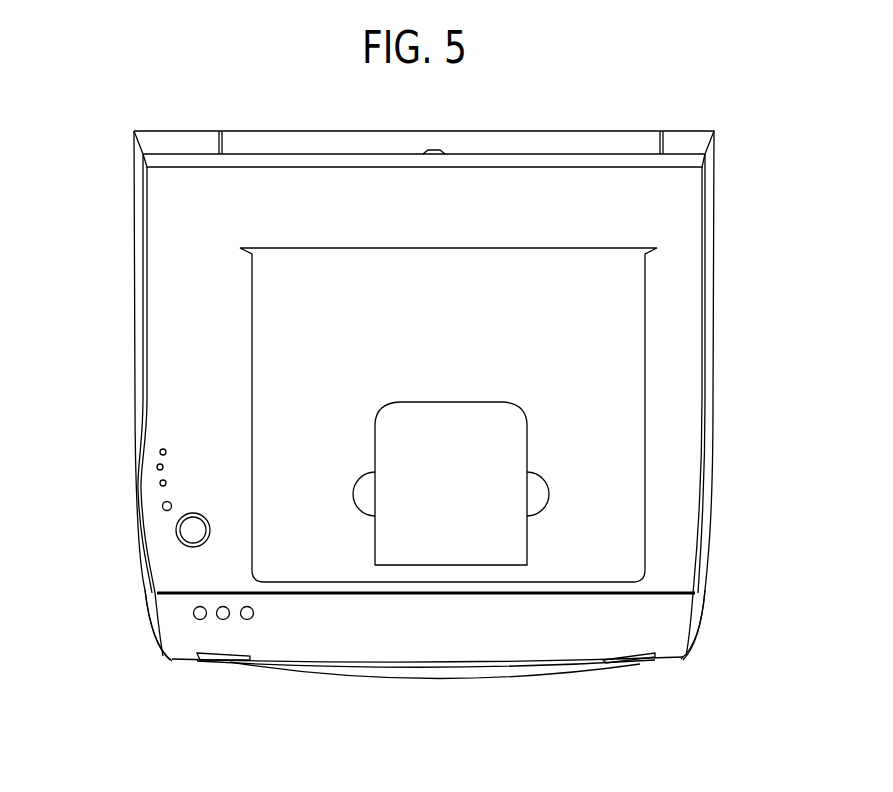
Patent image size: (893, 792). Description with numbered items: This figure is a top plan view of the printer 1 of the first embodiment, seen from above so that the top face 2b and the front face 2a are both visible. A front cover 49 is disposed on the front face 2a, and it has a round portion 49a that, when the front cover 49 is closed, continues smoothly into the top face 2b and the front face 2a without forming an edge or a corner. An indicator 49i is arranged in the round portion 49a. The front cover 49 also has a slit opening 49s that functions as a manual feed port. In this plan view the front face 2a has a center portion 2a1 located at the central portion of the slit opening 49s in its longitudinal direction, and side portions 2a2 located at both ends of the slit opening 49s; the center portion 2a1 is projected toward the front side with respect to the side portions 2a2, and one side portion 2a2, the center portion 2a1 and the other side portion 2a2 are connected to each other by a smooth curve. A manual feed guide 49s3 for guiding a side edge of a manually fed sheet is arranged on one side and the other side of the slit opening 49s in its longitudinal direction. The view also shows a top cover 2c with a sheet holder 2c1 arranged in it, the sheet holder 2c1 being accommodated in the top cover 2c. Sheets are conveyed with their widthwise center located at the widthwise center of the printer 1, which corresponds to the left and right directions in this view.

The printer 1 is at (108, 170).
The top face 2b is at (172, 255).
The top cover 2c is at (182, 330).
The sheet holder 2c1 is at (492, 465).
The front face 2a is at (365, 700).
The center portion 2a1 is at (383, 680).
The side portions 2a2 is at (175, 662).
The front cover 49 is at (662, 635).
The round portion 49a is at (663, 613).
The indicator 49i is at (193, 612).
The slit opening 49s is at (483, 668).
The manual feed guide 49s3 is at (238, 660).